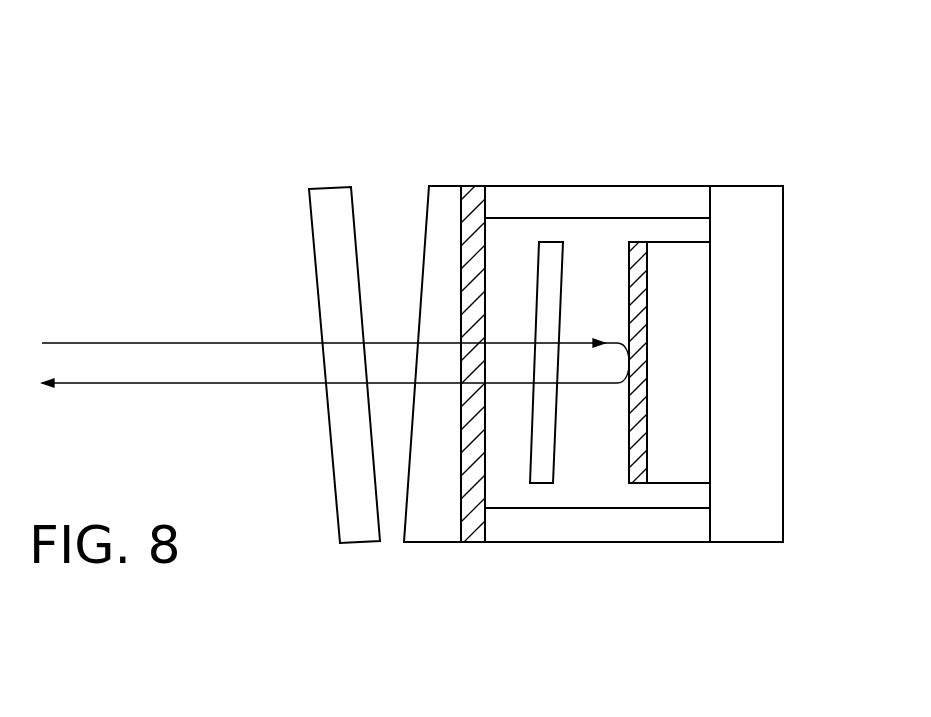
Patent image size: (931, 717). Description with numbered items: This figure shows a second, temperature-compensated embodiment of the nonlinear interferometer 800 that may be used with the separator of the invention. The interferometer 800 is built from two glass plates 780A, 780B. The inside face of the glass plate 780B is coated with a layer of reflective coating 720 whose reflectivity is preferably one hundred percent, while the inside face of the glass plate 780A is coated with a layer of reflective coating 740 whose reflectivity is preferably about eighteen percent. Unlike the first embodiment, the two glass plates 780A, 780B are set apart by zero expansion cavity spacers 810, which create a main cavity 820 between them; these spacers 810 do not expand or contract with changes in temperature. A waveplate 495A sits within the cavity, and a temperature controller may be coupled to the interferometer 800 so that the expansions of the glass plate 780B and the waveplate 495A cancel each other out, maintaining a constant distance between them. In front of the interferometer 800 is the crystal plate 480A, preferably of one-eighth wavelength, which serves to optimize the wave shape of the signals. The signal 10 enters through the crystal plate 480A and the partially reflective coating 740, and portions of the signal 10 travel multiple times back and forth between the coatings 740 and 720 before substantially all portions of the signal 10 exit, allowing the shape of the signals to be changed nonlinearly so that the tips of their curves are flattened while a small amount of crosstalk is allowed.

The signal 10 is at (140, 342).
The interferometer 800 is at (570, 49).
The reflective coating 740 is at (455, 72).
The reflective coating 720 is at (620, 72).
The glass plate 780A is at (440, 186).
The glass plate 780B is at (818, 87).
The crystal plate 480A is at (362, 547).
The waveplate 495A is at (540, 487).
The zero expansion cavity spacers 810 is at (678, 546).
The main cavity 820 is at (602, 500).